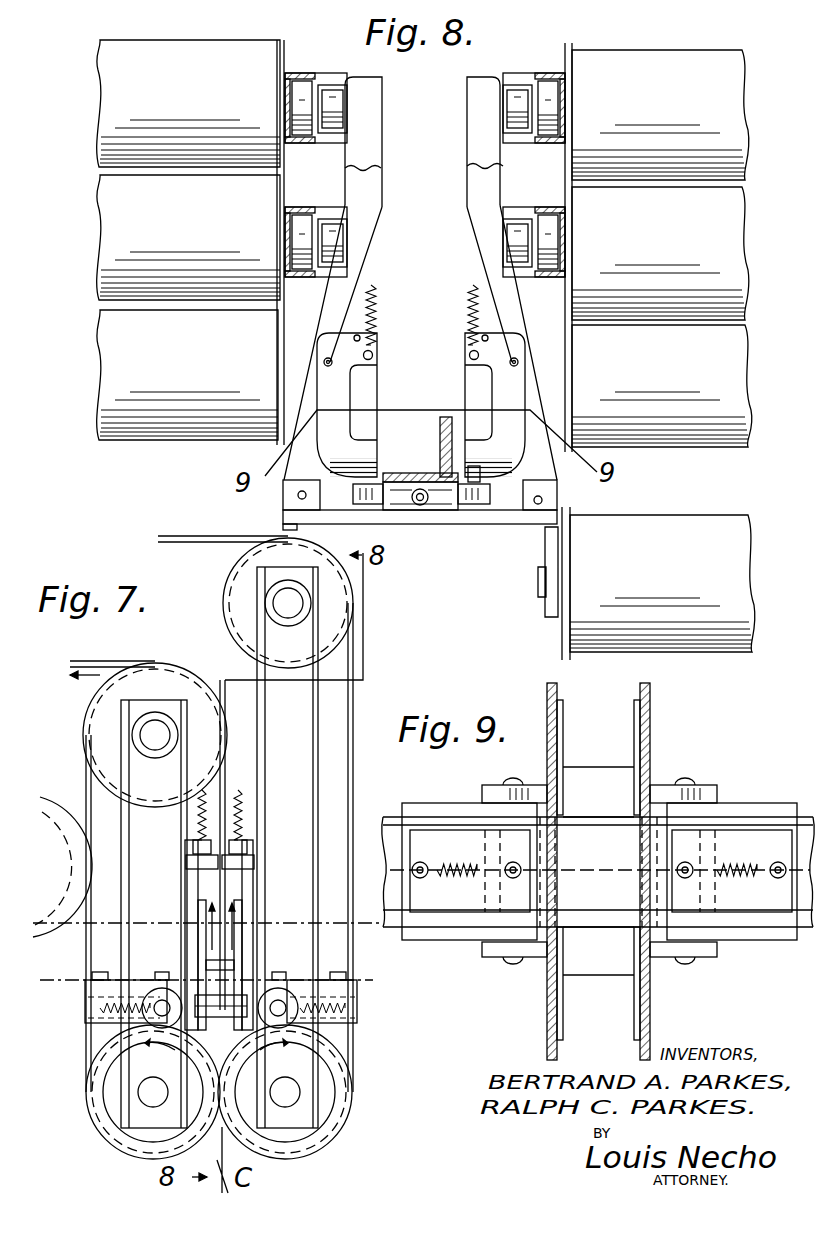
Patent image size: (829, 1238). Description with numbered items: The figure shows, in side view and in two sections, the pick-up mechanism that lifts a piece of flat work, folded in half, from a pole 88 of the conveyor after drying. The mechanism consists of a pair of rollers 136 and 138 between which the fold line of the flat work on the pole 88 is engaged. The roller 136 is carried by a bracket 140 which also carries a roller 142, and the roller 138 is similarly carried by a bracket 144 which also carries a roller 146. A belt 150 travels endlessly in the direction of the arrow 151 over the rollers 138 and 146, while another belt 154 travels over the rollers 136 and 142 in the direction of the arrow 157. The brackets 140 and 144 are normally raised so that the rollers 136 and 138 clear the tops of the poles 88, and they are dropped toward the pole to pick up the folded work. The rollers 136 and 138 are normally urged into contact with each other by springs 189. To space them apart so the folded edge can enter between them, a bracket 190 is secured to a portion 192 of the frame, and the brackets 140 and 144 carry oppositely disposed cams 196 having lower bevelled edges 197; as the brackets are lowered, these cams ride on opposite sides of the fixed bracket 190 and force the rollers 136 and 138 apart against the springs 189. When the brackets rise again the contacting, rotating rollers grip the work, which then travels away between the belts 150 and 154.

In FIG. 7, the pole 88 is at (223, 1158).
In FIG. 8, the roller 136 is at (646, 583).
In FIG. 7, the roller 136 is at (100, 1110).
In FIG. 7, the roller 138 is at (335, 1110).
In FIG. 8, the bracket 140 is at (355, 270).
In FIG. 7, the bracket 140 is at (122, 805).
In FIG. 8, the roller 142 is at (423, 247).
In FIG. 7, the roller 142 is at (105, 710).
In FIG. 8, the bracket 144 is at (362, 150).
In FIG. 7, the bracket 144 is at (287, 847).
In FIG. 8, the roller 146 is at (423, 110).
In FIG. 7, the roller 146 is at (330, 632).
In FIG. 7, the belt 150 is at (230, 835).
In FIG. 7, the arrow 151 is at (68, 652).
In FIG. 7, the belt 154 is at (75, 1072).
In FIG. 7, the arrow 157 is at (80, 946).
In FIG. 7, the springs 189 is at (130, 1012).
In FIG. 9, the springs 189 is at (599, 871).
In FIG. 8, the bracket 190 is at (483, 497).
In FIG. 7, the bracket 190 is at (245, 975).
In FIG. 9, the bracket 190 is at (598, 871).
In FIG. 8, the portion of the frame 192 is at (440, 452).
In FIG. 7, the portion of the frame 192 is at (380, 975).
In FIG. 9, the portion of the frame 192 is at (392, 817).
In FIG. 8, the cams 196 is at (340, 403).
In FIG. 7, the cams 196 is at (186, 896).
In FIG. 9, the cams 196 is at (640, 740).
In FIG. 8, the bevelled edges 197 is at (338, 470).
In FIG. 7, the bevelled edges 197 is at (196, 975).